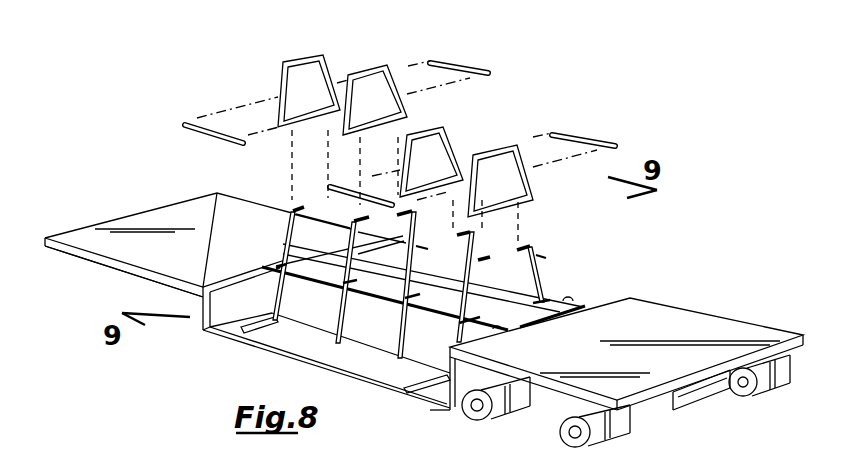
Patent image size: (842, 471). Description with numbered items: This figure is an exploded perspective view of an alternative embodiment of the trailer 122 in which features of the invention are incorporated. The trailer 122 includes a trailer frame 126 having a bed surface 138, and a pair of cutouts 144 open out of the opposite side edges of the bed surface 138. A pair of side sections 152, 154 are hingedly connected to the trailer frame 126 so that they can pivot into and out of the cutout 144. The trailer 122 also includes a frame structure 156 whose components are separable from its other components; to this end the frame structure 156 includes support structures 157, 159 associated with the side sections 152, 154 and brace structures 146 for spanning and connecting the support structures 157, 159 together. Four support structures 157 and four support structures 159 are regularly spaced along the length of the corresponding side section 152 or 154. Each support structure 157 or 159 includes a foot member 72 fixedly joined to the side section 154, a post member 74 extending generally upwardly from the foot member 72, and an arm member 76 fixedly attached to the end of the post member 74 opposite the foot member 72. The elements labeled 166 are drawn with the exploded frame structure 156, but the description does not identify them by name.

The trailer 122 is at (655, 125).
The trailer frame 126 is at (90, 255).
The bed surface 138 is at (180, 215).
The cutouts 144 is at (616, 372).
The brace structures 146 is at (281, 87).
The side section 152 is at (318, 272).
The side section 154 is at (568, 299).
The frame structure 156 is at (270, 66).
The support structures 157 is at (283, 233).
The support structures 159 is at (419, 247).
The rod 166 is at (206, 138).
The foot member 72 is at (343, 284).
The post member 74 is at (278, 246).
The arm member 76 is at (297, 207).